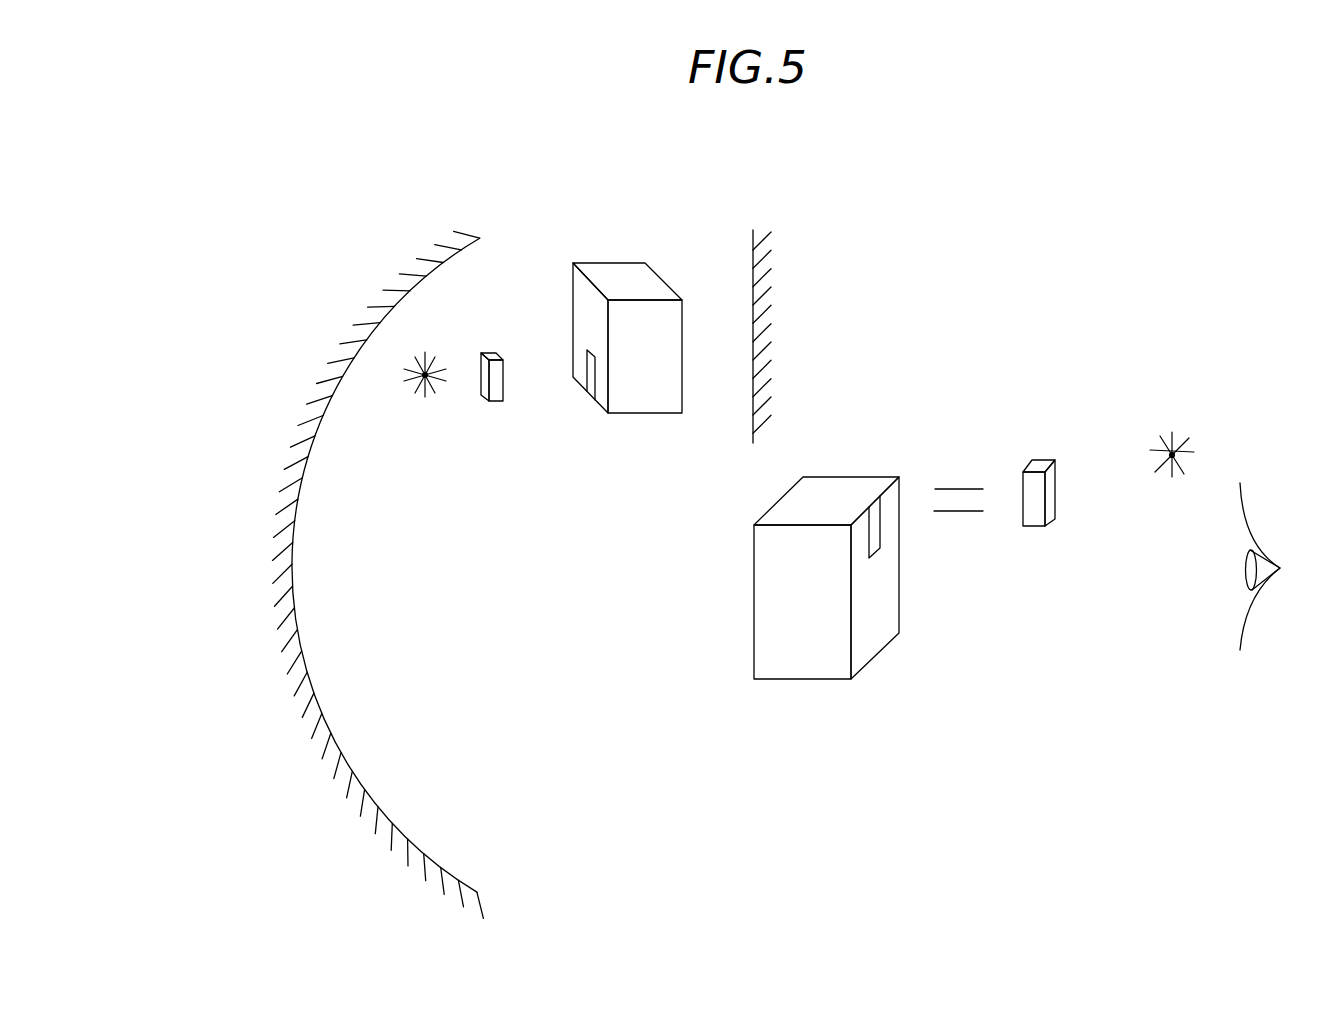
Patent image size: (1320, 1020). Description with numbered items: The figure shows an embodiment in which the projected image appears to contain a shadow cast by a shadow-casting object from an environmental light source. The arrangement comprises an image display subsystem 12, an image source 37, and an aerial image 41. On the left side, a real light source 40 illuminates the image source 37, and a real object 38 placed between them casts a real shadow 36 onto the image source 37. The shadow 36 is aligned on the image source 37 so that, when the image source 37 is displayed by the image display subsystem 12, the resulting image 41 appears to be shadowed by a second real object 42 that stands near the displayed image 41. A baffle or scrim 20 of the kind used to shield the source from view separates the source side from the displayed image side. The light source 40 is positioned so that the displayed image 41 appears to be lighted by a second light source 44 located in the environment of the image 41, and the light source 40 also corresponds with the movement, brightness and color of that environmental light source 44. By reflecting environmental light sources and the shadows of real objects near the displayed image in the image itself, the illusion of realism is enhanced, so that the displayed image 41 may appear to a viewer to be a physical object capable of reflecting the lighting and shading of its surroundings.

The image display subsystem 12 is at (330, 840).
The baffle or scrim 20 is at (755, 363).
The real shadow 36 is at (592, 374).
The image source 37 is at (663, 300).
The real object 38 is at (492, 352).
The real light source 40 is at (393, 342).
The aerial image 41 is at (802, 679).
The second real object 42 is at (1032, 526).
The second light source 44 is at (1173, 452).